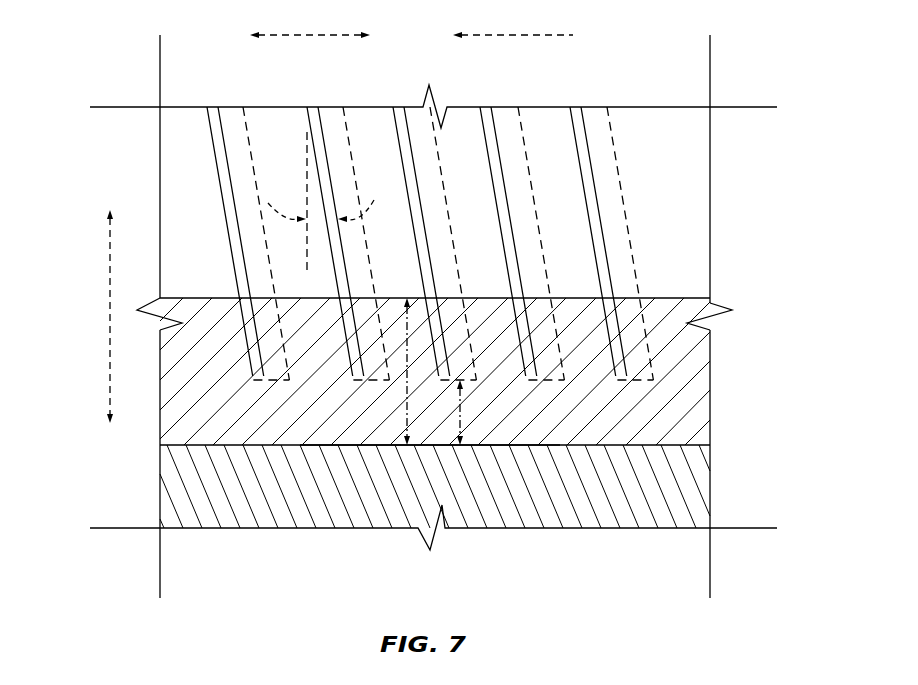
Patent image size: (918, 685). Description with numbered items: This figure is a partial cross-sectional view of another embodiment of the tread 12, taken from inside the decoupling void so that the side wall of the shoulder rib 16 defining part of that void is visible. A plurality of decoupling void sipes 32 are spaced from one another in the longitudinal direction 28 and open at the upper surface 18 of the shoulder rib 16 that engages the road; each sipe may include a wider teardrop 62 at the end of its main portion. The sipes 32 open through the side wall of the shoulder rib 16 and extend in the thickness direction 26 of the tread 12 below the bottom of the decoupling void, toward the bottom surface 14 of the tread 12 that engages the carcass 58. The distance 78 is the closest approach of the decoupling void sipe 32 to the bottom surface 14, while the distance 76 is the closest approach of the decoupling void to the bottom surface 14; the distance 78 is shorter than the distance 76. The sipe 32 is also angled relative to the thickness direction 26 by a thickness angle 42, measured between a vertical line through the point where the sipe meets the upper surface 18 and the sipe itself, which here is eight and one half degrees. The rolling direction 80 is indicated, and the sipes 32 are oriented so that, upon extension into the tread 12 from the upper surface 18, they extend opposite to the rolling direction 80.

The tread 12 is at (725, 88).
The bottom surface 14 is at (328, 455).
The shoulder rib 16 is at (623, 107).
The upper surface 18 is at (537, 98).
The thickness direction 26 is at (110, 318).
The longitudinal direction 28 is at (313, 37).
The decoupling void sipe 32 is at (213, 137).
The thickness angle 42 is at (366, 218).
The carcass 58 is at (450, 499).
The teardrop 62 is at (582, 200).
The distance 76 is at (407, 390).
The distance 78 is at (462, 410).
The rolling direction 80 is at (520, 33).